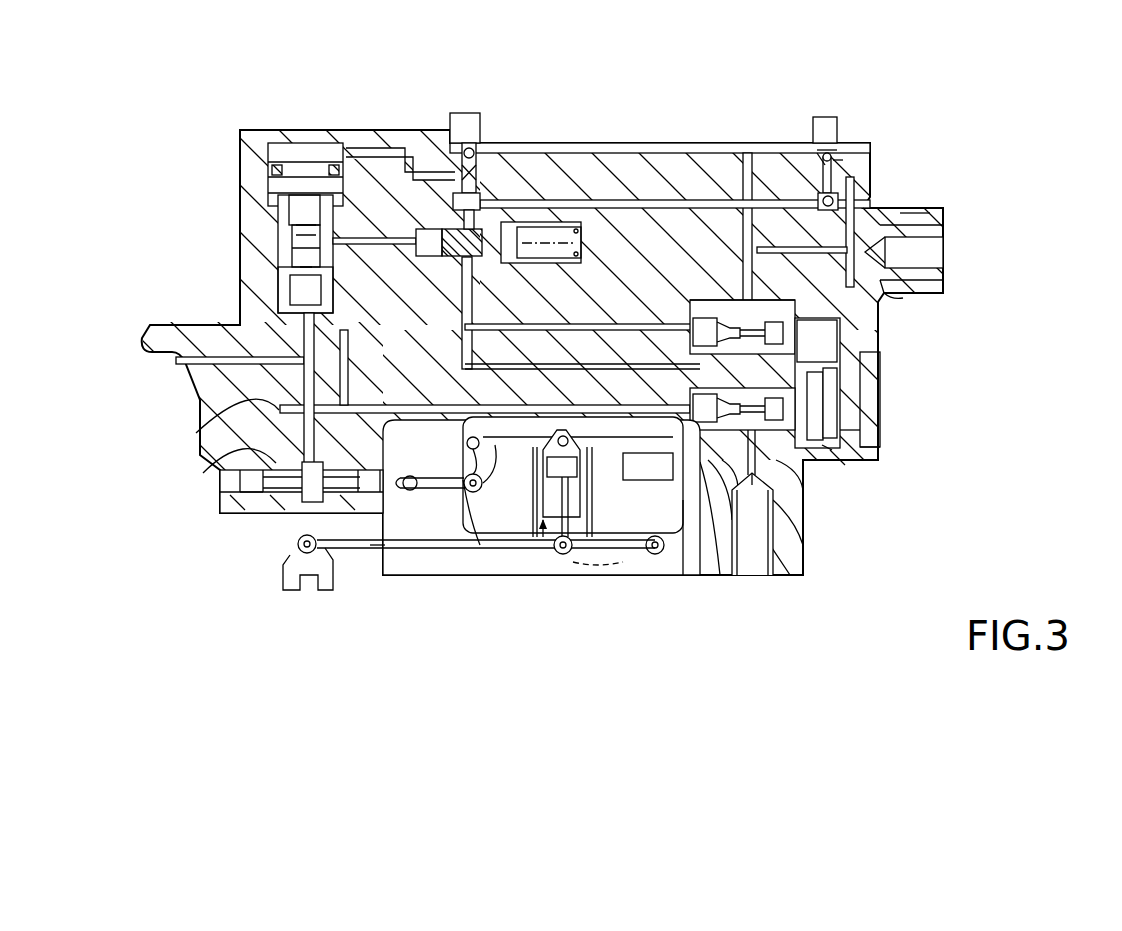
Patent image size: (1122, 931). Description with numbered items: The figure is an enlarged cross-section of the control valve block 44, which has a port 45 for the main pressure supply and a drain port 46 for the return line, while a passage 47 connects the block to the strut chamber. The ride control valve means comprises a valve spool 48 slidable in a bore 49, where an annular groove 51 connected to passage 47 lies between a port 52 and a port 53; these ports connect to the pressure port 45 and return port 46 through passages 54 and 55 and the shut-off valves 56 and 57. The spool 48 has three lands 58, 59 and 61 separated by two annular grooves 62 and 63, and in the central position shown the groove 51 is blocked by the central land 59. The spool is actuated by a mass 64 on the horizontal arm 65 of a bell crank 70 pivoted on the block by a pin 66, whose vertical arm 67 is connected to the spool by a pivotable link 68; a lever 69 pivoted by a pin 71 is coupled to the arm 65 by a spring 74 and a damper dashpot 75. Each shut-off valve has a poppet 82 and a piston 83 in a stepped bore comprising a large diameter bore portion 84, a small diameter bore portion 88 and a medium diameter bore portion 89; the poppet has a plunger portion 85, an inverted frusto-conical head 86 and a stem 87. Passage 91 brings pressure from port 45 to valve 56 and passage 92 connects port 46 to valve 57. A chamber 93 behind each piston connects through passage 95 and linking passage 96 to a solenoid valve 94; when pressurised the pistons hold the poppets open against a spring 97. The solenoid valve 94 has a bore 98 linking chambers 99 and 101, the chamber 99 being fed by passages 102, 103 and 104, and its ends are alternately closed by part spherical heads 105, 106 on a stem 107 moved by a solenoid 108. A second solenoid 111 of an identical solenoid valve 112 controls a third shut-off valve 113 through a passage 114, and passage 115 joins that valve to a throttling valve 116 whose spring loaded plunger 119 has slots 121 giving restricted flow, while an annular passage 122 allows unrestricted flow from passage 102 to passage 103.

The valve block 44 is at (607, 138).
The port 45 is at (760, 562).
The drain port 46 is at (932, 252).
The passage 47 is at (190, 340).
The valve spool 48 is at (414, 492).
The bore 49 is at (240, 490).
The annular groove 51 is at (337, 553).
The port 52 is at (237, 453).
The port 53 is at (398, 436).
The passage 54 is at (230, 410).
The passage 55 is at (370, 362).
The shut-off valve 56 is at (845, 468).
The shut-off valve 57 is at (868, 328).
The land 58 is at (260, 512).
The central land 59 is at (290, 530).
The land 61 is at (370, 550).
The annular groove 62 is at (288, 505).
The annular groove 63 is at (340, 500).
The mass 64 is at (637, 578).
The horizontal arm 65 is at (650, 472).
The pin 66 is at (503, 580).
The vertical arm 67 is at (476, 492).
The pivotable link 68 is at (466, 578).
The lever 69 is at (585, 550).
The bell crank 70 is at (518, 458).
The pin 71 is at (656, 556).
The spring 74 is at (605, 585).
The damper dashpot 75 is at (549, 580).
The poppet 82 is at (806, 470).
The piston 83 is at (820, 404).
The large diameter bore portion 84 is at (880, 455).
The plunger portion 85 is at (828, 450).
The inverted frusto-conical head 86 is at (747, 432).
The stem 87 is at (781, 533).
The small diameter bore portion 88 is at (825, 380).
The medium diameter bore portion 89 is at (720, 578).
The passage 91 is at (797, 552).
The passage 92 is at (742, 252).
The chamber 93 is at (862, 430).
The solenoid valve 94 is at (845, 160).
The passage 95 is at (903, 297).
The linking passage 96 is at (862, 360).
The spring 97 is at (683, 578).
The bore 98 is at (812, 153).
The chamber 99 is at (827, 211).
The chamber 101 is at (831, 158).
The passage 102 is at (692, 315).
The passage 103 is at (407, 137).
The passage 104 is at (567, 142).
The part spherical head 105 is at (930, 215).
The part spherical head 106 is at (816, 152).
The stem 107 is at (830, 200).
The solenoid 108 is at (827, 115).
The solenoid 111 is at (460, 120).
The solenoid valve 112 is at (483, 137).
The shut-off valve 113 is at (283, 233).
The passage 114 is at (370, 142).
The passage 115 is at (353, 244).
The throttling valve 116 is at (492, 262).
The spring loaded plunger 119 is at (480, 207).
The slots 121 is at (445, 232).
The annular passage 122 is at (455, 258).